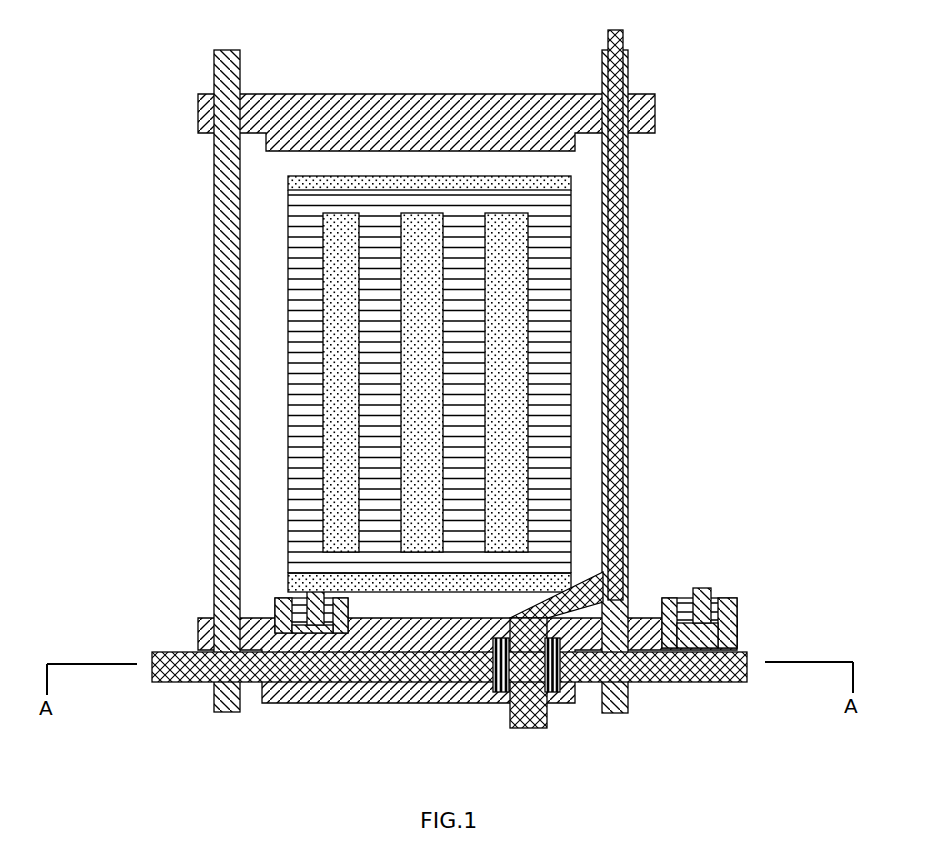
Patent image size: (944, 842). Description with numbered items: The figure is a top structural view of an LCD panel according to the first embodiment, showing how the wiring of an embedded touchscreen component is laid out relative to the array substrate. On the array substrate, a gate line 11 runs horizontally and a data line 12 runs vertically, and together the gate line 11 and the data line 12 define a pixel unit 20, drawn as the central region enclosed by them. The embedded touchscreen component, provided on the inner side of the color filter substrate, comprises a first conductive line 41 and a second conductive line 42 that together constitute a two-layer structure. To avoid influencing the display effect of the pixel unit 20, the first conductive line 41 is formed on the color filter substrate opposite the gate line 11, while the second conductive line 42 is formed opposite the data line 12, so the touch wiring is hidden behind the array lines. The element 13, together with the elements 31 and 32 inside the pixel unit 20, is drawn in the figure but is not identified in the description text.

The gate line 11 is at (198, 117).
The data line 12 is at (227, 713).
The contact strip 13 is at (503, 668).
The pixel unit 20 is at (363, 300).
The line electrode layer 31 is at (303, 443).
The dotted spacer columns 32 is at (333, 339).
The first conductive line 41 is at (748, 660).
The second conductive line 42 is at (627, 533).